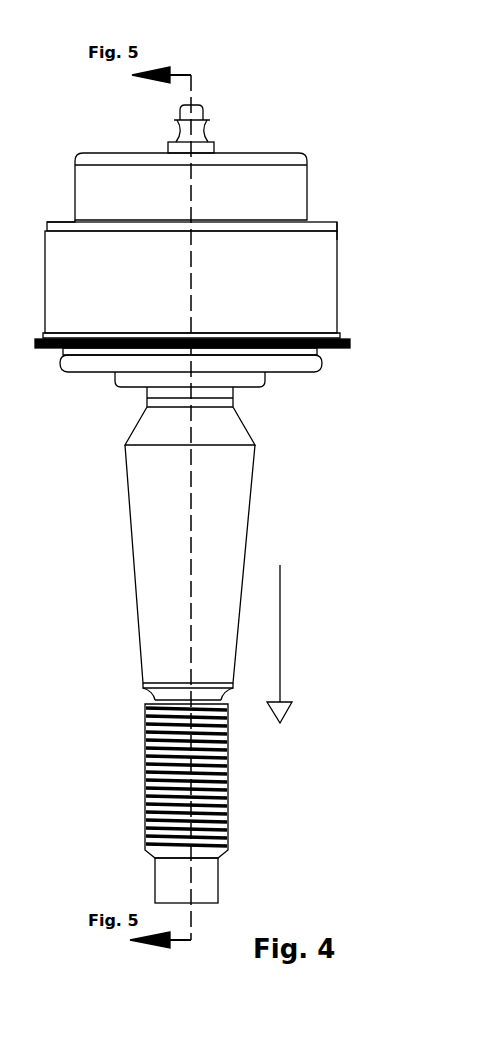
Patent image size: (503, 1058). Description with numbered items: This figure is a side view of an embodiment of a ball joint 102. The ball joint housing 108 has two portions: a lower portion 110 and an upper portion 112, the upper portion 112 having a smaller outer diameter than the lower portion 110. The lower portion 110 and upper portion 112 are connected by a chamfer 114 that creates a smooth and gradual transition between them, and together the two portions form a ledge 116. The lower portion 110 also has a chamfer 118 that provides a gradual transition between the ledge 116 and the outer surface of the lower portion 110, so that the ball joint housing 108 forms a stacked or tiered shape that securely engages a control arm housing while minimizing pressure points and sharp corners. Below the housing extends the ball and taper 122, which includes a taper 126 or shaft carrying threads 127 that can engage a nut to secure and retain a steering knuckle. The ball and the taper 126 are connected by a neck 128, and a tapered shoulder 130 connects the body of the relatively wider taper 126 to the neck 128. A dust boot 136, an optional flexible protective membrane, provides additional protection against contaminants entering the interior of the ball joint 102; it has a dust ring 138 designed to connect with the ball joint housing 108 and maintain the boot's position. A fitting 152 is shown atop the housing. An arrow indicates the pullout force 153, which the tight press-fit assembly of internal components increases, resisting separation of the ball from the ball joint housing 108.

The ball joint 102 is at (415, 378).
The ball joint housing 108 is at (328, 152).
The lower portion 110 is at (315, 283).
The upper portion 112 is at (270, 188).
The chamfer 114 is at (308, 224).
The ledge 116 is at (60, 222).
The chamfer 118 is at (337, 228).
The ball and taper 122 is at (100, 546).
The taper 126 is at (218, 504).
The threads 127 is at (215, 785).
The neck 128 is at (218, 396).
The shoulder 130 is at (148, 430).
The dust boot 136 is at (302, 373).
The dust ring 138 is at (350, 343).
The fitting nipple 152 is at (202, 128).
The pullout force 153 is at (291, 644).